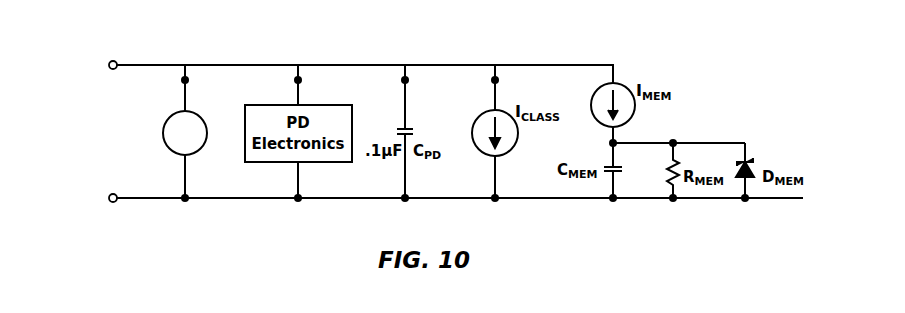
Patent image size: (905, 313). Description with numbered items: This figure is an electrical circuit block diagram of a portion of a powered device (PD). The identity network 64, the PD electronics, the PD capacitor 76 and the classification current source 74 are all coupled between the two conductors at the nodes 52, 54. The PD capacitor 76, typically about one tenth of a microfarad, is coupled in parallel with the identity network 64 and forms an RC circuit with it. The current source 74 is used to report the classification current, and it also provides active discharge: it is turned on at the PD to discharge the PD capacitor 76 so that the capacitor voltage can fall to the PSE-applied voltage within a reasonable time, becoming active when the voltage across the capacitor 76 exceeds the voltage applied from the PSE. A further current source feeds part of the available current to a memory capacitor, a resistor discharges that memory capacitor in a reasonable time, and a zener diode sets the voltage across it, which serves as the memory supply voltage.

The node 52 is at (112, 61).
The node 54 is at (113, 203).
The identity network 64 is at (179, 113).
The current source 74 is at (485, 113).
The PD capacitor 76 is at (399, 118).